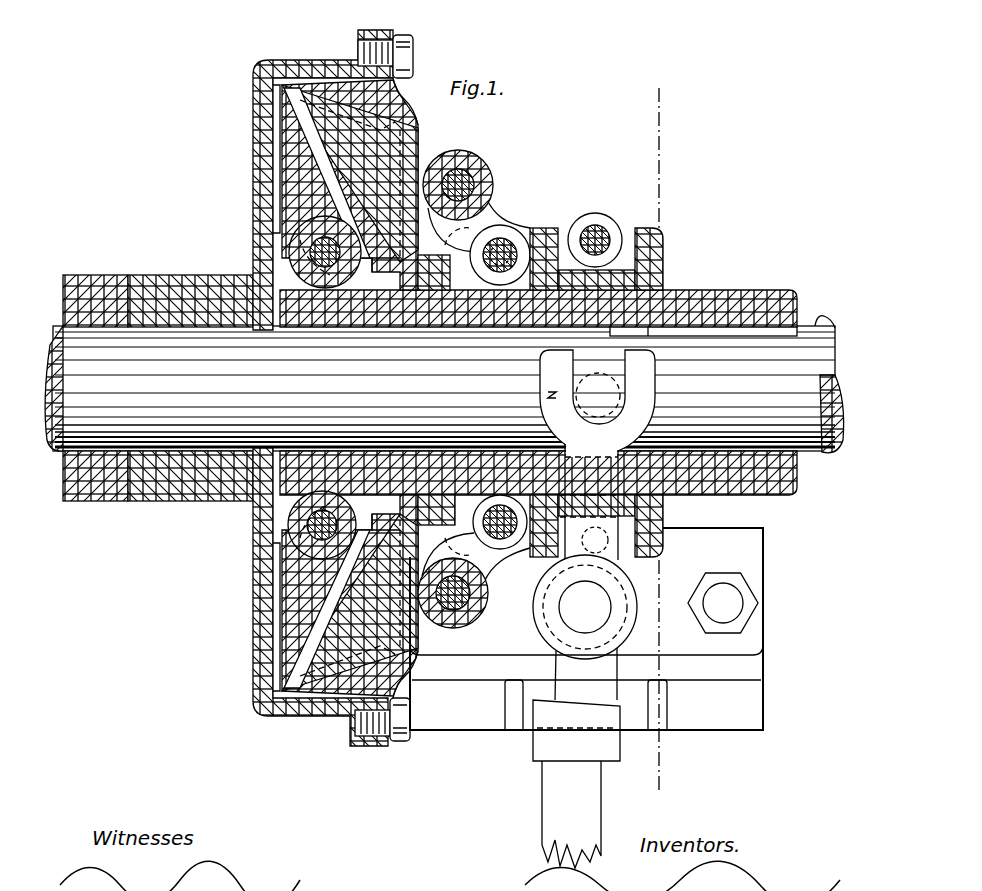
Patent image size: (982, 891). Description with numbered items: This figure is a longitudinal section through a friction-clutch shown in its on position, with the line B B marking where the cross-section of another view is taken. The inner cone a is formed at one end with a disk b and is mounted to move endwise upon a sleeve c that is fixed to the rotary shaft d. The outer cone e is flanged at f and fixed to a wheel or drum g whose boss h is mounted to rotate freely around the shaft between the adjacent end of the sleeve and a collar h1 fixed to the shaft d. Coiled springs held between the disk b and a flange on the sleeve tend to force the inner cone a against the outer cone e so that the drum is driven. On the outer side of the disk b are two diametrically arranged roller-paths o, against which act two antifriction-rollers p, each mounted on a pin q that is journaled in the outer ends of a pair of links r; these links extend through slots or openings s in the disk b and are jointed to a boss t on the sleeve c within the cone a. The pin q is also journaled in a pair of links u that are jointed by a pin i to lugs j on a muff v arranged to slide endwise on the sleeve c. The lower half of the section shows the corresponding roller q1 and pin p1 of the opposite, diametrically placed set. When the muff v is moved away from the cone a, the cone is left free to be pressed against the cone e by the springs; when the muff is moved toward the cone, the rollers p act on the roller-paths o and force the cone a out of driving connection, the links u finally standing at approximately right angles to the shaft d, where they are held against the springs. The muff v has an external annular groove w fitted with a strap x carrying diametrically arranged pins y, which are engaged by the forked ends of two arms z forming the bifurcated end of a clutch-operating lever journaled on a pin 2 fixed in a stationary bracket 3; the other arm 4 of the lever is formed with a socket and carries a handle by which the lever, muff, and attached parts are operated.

The inner cone a is at (350, 128).
The disk b is at (419, 133).
The sleeve c is at (538, 392).
The rotary shaft d is at (444, 384).
The outer cone e is at (410, 102).
The flange f is at (397, 33).
The wheel or drum g is at (262, 178).
The boss h is at (183, 277).
The collar h1 is at (100, 277).
The pin i is at (512, 242).
The lugs j is at (478, 262).
The roller-paths o is at (446, 232).
The antifriction-rollers p is at (480, 190).
The pin q is at (470, 162).
The roller q1 is at (485, 590).
The pin p1 is at (470, 600).
The links r is at (358, 228).
The slots or openings s is at (397, 256).
The boss t is at (328, 228).
The links u is at (505, 240).
The muff v is at (540, 235).
The external annular groove w is at (618, 272).
The strap x is at (585, 220).
The pins y is at (598, 394).
The arms z is at (547, 391).
The pin 2 is at (586, 555).
The stationary bracket 3 is at (586, 629).
The arm 4 is at (548, 770).
The line B B is at (658, 439).